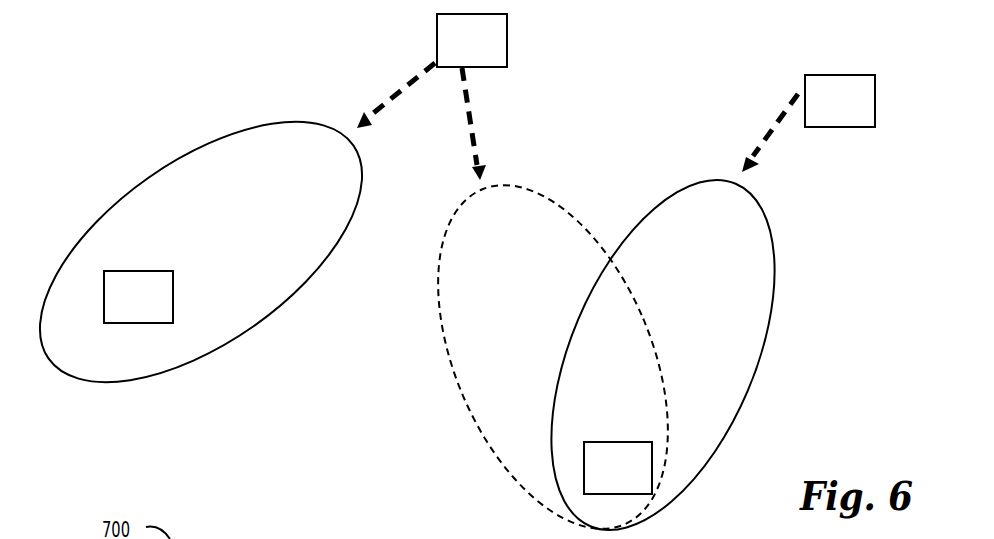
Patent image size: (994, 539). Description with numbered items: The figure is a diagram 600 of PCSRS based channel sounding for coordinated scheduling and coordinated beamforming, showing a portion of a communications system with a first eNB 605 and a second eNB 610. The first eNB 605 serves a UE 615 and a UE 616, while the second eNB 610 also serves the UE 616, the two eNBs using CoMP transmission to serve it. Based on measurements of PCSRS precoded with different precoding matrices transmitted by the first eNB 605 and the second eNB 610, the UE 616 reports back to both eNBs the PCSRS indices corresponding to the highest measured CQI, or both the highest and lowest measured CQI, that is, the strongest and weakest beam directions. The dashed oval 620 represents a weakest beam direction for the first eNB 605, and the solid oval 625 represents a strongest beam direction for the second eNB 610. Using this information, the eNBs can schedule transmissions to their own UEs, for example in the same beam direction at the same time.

The diagram 600 is at (270, 32).
The first eNB 605 is at (437, 30).
The second eNB 610 is at (822, 75).
The UE 615 is at (139, 271).
The UE 616 is at (618, 442).
The dashed oval 620 is at (447, 340).
The solid oval 625 is at (773, 305).